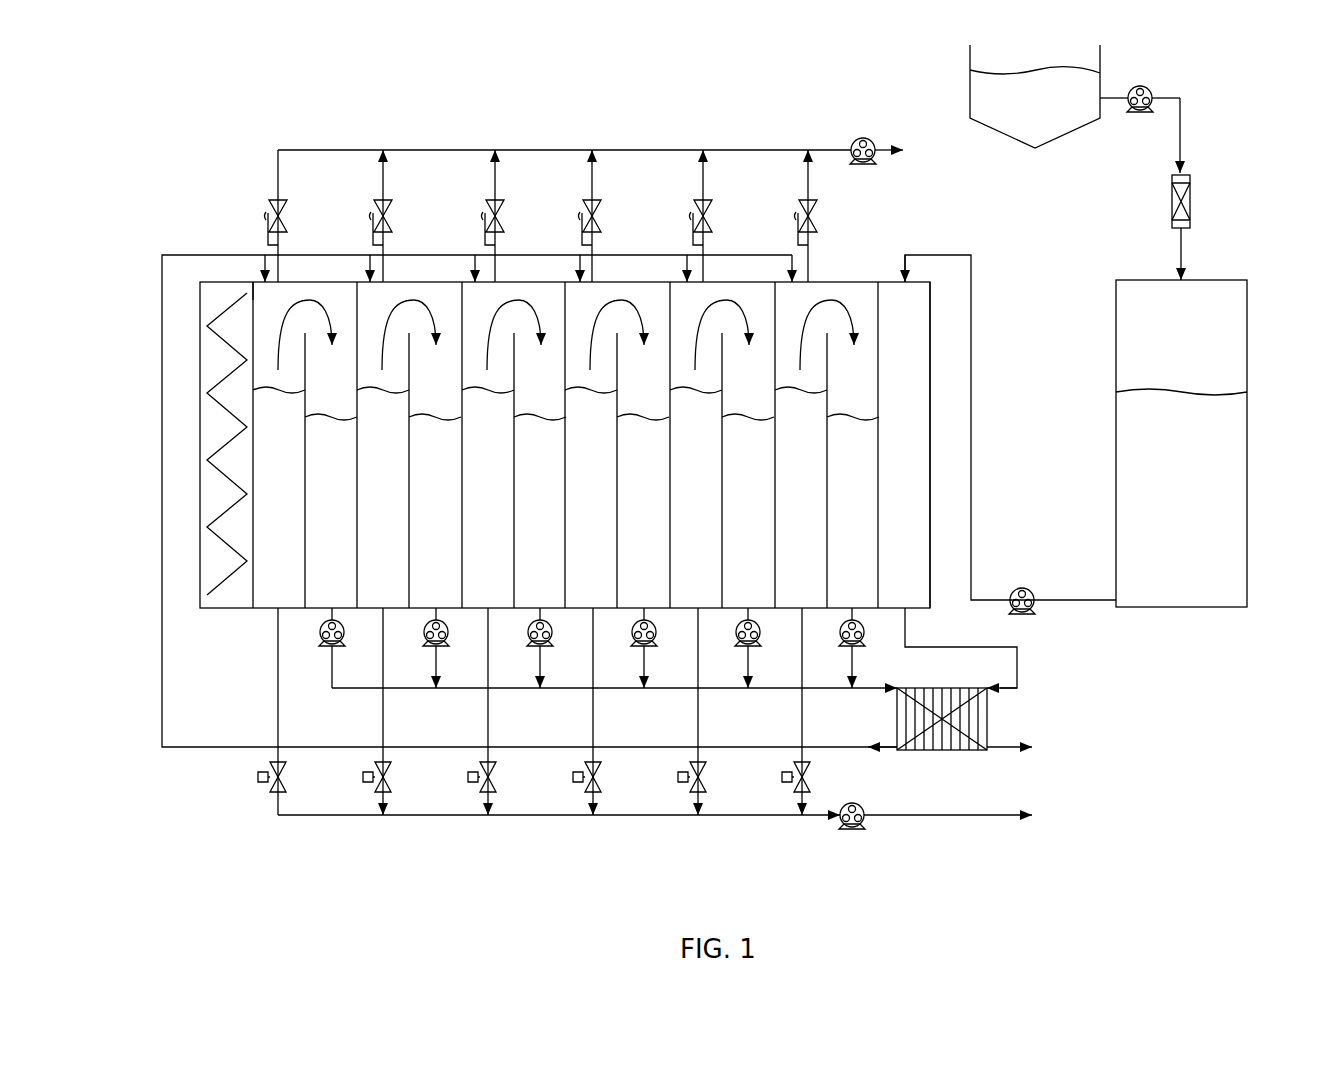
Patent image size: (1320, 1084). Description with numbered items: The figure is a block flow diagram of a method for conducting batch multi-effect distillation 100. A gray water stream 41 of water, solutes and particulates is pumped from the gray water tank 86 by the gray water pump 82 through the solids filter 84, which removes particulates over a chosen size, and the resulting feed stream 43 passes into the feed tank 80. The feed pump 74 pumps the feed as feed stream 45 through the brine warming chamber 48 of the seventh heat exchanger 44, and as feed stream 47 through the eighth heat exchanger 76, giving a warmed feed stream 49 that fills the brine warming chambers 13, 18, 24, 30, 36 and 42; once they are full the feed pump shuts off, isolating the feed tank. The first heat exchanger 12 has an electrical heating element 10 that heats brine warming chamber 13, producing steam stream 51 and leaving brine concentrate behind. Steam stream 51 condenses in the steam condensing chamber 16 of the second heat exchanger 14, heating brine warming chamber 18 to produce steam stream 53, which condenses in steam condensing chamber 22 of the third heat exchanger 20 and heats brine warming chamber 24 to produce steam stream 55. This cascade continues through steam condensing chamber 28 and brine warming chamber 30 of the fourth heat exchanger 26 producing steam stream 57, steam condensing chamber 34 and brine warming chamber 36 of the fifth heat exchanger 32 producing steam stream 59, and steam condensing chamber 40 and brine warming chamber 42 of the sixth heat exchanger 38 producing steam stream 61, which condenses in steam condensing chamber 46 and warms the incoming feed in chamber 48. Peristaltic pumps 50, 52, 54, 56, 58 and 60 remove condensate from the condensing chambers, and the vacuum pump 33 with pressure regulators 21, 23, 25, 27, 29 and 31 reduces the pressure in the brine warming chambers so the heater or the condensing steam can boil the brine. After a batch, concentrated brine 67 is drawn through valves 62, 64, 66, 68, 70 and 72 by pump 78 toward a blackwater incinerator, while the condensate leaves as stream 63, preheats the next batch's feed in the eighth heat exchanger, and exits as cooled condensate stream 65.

The batch multi-effect distillation method 100 is at (208, 126).
The electrical heating element 10 is at (226, 568).
The first heat exchanger 12 is at (253, 282).
The second heat exchanger 14 is at (357, 282).
The third heat exchanger 20 is at (462, 282).
The fourth heat exchanger 26 is at (565, 282).
The fifth heat exchanger 32 is at (670, 282).
The sixth heat exchanger 38 is at (775, 282).
The brine warming chamber 13 is at (280, 536).
The steam condensing chamber 16 is at (334, 536).
The brine warming chamber 18 is at (386, 536).
The steam condensing chamber 22 is at (436, 536).
The brine warming chamber 24 is at (491, 536).
The steam condensing chamber 28 is at (543, 536).
The brine warming chamber 30 is at (594, 536).
The steam condensing chamber 34 is at (646, 536).
The brine warming chamber 36 is at (696, 536).
The steam condensing chamber 40 is at (746, 536).
The brine warming chamber 42 is at (801, 536).
The steam condensing chamber 46 is at (851, 536).
The brine warming chamber 48 is at (904, 536).
The pressure regulator 21 is at (268, 212).
The pressure regulator 23 is at (373, 212).
The pressure regulator 25 is at (485, 212).
The pressure regulator 27 is at (582, 212).
The pressure regulator 29 is at (693, 212).
The pressure regulator 31 is at (798, 212).
The vacuum pump 33 is at (868, 162).
The gray water stream 41 is at (1199, 133).
The feed stream 43 is at (1162, 254).
The seventh heat exchanger 44 is at (878, 282).
The feed stream 45 is at (957, 412).
The feed stream 47 is at (979, 648).
The warmed feed stream 49 is at (529, 503).
The peristaltic pump 50 is at (344, 640).
The peristaltic pump 52 is at (448, 640).
The peristaltic pump 54 is at (552, 640).
The peristaltic pump 56 is at (656, 640).
The peristaltic pump 58 is at (760, 640).
The peristaltic pump 60 is at (864, 640).
The steam stream 51 is at (313, 343).
The steam stream 53 is at (417, 343).
The steam stream 55 is at (522, 343).
The steam stream 57 is at (626, 343).
The steam stream 59 is at (730, 343).
The steam stream 61 is at (835, 343).
The valve 62 is at (262, 777).
The valve 64 is at (367, 777).
The valve 66 is at (470, 777).
The valve 68 is at (575, 777).
The valve 70 is at (680, 777).
The valve 72 is at (784, 777).
The condensate stream 63 is at (614, 703).
The cooled condensate stream 65 is at (1027, 744).
The concentrated brine 67 is at (966, 814).
The feed pump 74 is at (1031, 590).
The eighth heat exchanger 76 is at (942, 751).
The pump 78 is at (864, 823).
The feed tank 80 is at (1247, 280).
The gray water pump 82 is at (1150, 88).
The solids filter 84 is at (1192, 178).
The gray water tank 86 is at (1025, 150).